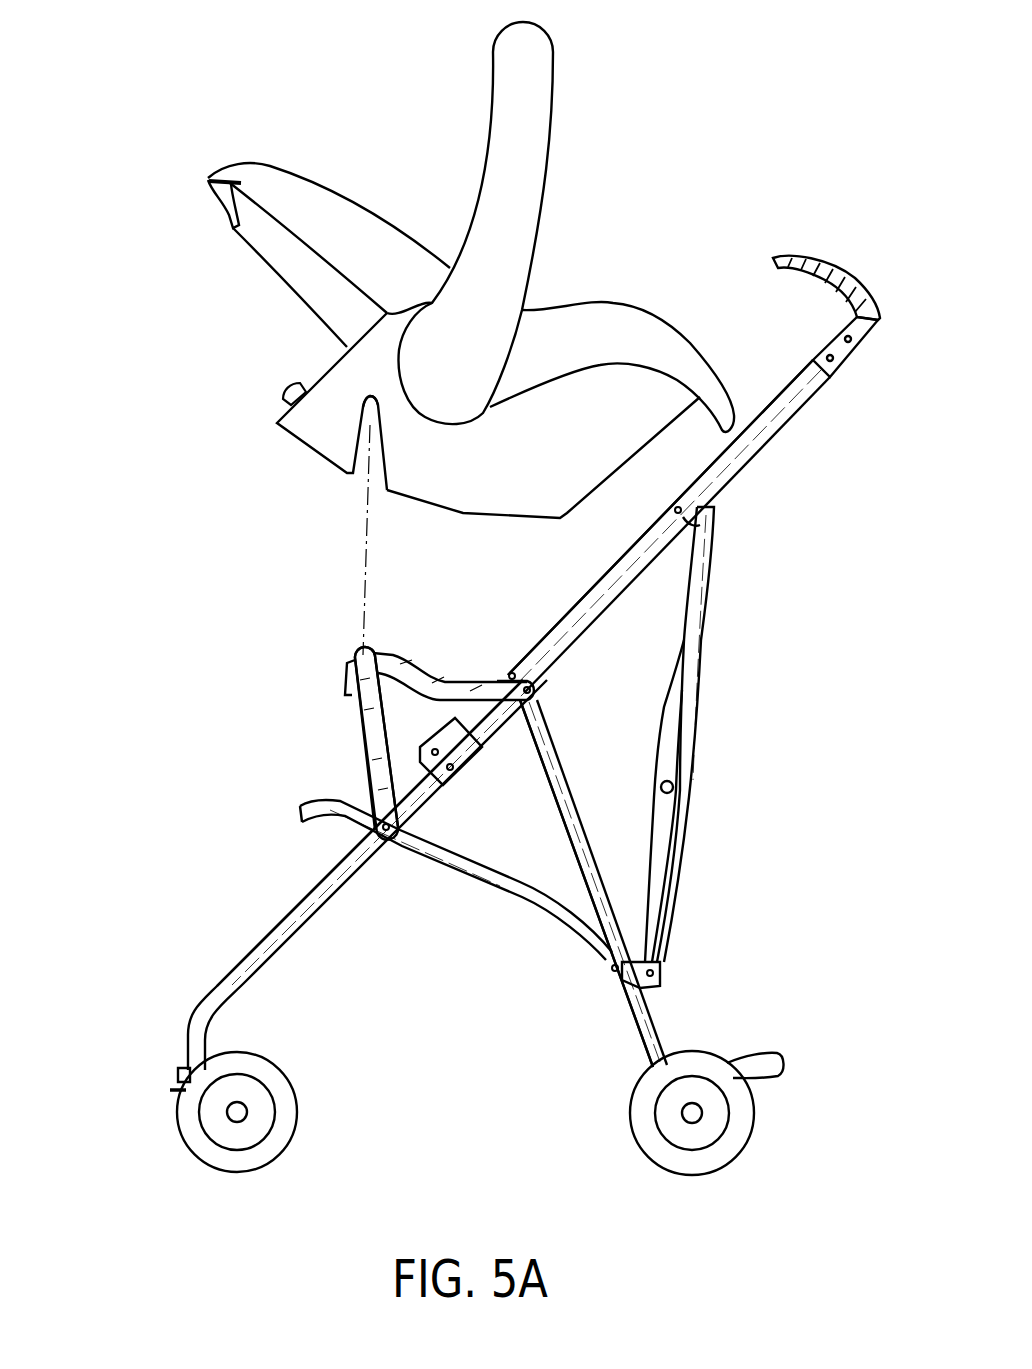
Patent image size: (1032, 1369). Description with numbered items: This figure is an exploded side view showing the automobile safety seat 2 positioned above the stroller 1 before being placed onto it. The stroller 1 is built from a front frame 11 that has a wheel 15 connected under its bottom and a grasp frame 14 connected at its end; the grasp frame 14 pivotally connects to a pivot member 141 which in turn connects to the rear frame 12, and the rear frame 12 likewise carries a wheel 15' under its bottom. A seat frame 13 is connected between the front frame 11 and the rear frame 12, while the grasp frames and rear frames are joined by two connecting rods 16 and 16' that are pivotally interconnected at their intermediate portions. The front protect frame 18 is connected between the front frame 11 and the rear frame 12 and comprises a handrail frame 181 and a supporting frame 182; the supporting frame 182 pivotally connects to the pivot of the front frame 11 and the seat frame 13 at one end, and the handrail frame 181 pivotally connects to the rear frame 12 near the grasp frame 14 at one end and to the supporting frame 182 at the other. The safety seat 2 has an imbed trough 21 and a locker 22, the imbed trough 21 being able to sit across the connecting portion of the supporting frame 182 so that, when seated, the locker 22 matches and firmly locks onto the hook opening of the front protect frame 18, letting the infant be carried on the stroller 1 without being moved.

The stroller 1 is at (857, 755).
The automobile safety seat 2 is at (643, 142).
The front frame 11 is at (268, 944).
The rear frame 12 is at (637, 1020).
The seat frame 13 is at (493, 880).
The grasp frame 14 is at (723, 463).
The pivot member 141 is at (537, 680).
The wheel 15 is at (279, 1109).
The wheel 15' is at (658, 1113).
The connecting rod 16 is at (731, 734).
The connecting rod 16' is at (720, 801).
The front protect frame 18 is at (280, 693).
The handrail frame 181 is at (487, 687).
The supporting frame 182 is at (357, 737).
The imbed trough 21 is at (365, 470).
The locker 22 is at (283, 392).